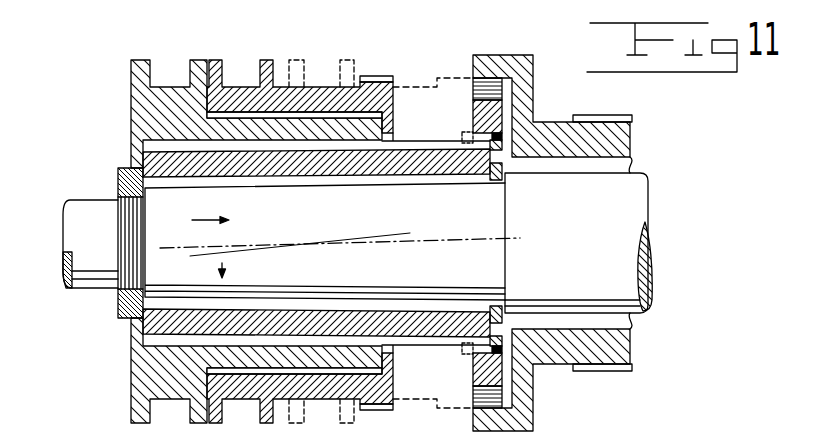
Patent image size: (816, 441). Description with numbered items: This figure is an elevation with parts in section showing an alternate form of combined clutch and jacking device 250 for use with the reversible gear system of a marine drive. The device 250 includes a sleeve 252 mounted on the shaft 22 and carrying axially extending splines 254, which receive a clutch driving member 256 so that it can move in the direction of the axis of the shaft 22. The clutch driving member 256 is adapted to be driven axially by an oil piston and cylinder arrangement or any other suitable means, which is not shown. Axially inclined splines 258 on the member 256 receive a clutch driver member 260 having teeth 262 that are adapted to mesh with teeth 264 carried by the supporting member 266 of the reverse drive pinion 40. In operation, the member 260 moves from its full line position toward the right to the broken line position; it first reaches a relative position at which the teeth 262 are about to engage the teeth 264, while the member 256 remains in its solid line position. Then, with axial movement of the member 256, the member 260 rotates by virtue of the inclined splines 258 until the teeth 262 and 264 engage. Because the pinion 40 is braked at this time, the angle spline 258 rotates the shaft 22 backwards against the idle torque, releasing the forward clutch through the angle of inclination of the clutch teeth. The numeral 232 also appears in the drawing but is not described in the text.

The shaft 22 is at (645, 222).
The reverse drive pinion 40 is at (632, 117).
The support member 232 is at (603, 440).
The combined clutch and jacking device 250 is at (425, 88).
The sleeve 252 is at (143, 155).
The axially extending splines 254 is at (433, 343).
The clutch driving member 256 is at (143, 95).
The axially inclined splines 258 is at (343, 118).
The clutch driver member 260 is at (313, 100).
The teeth 262 is at (373, 75).
The teeth 264 is at (485, 90).
The supporting member 266 is at (552, 132).